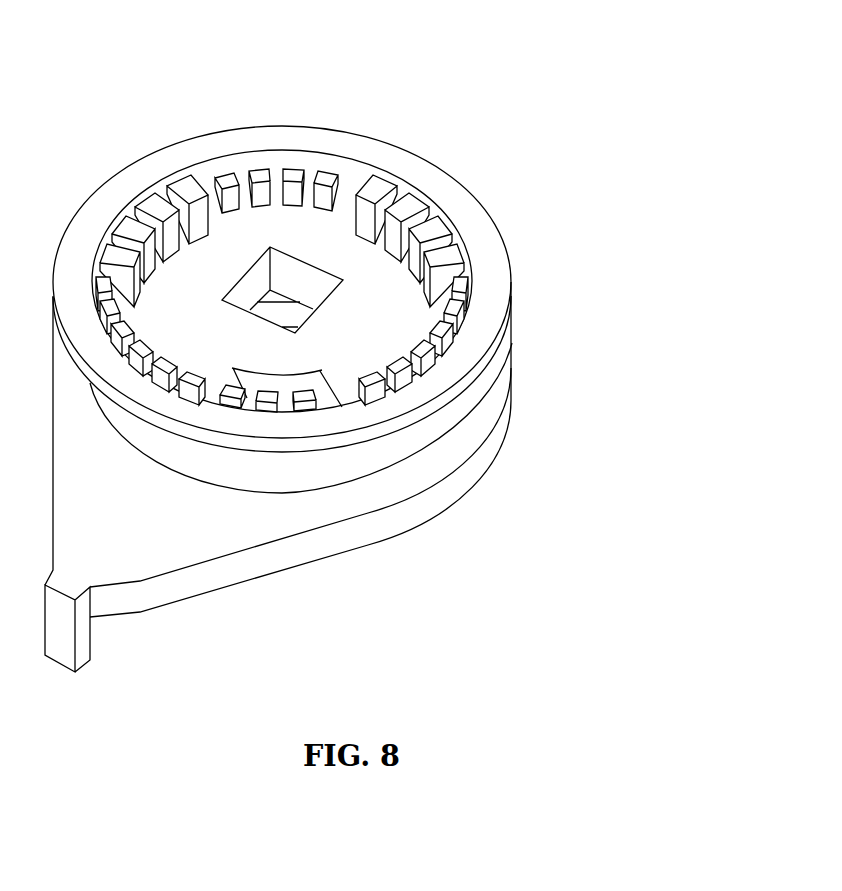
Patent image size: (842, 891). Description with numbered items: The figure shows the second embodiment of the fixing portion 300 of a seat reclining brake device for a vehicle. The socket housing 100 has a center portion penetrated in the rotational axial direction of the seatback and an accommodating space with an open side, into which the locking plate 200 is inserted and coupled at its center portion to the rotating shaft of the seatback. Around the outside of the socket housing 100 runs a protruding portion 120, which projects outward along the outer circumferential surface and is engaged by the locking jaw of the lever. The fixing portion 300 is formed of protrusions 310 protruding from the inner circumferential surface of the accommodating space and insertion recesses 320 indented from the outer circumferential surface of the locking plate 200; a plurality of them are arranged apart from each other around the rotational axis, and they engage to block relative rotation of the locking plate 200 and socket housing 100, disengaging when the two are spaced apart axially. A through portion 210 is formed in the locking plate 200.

The socket housing 100 is at (346, 341).
The protruding portion 120 is at (466, 350).
The locking plate 200 is at (419, 252).
The through portion 210 is at (412, 232).
The fixing portion 300 is at (372, 324).
The protrusion 310 is at (476, 268).
The insertion recess 320 is at (365, 190).